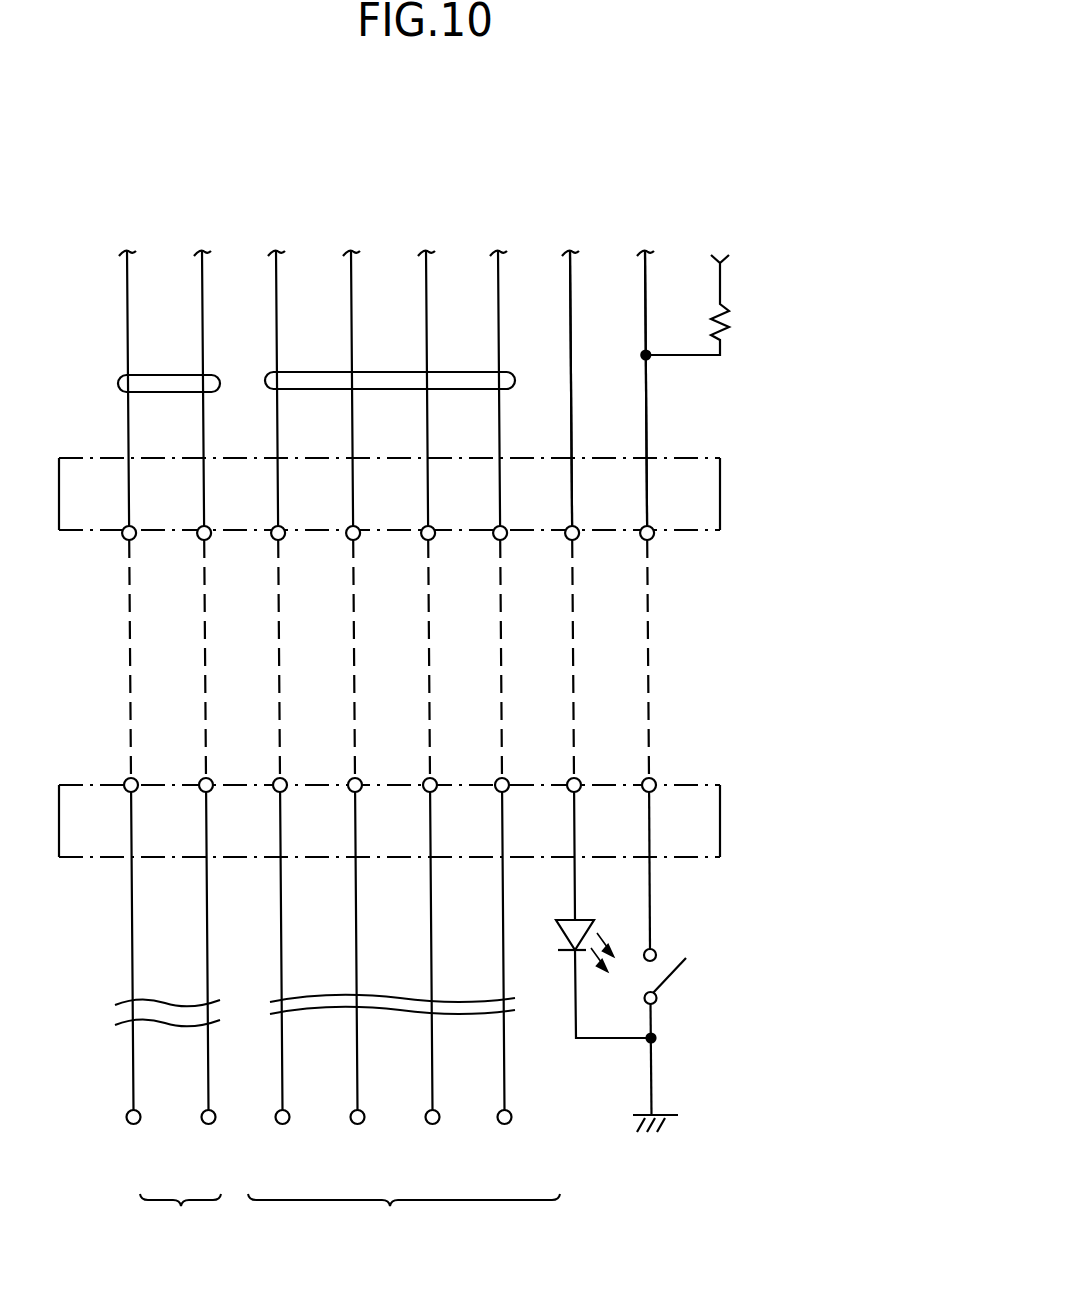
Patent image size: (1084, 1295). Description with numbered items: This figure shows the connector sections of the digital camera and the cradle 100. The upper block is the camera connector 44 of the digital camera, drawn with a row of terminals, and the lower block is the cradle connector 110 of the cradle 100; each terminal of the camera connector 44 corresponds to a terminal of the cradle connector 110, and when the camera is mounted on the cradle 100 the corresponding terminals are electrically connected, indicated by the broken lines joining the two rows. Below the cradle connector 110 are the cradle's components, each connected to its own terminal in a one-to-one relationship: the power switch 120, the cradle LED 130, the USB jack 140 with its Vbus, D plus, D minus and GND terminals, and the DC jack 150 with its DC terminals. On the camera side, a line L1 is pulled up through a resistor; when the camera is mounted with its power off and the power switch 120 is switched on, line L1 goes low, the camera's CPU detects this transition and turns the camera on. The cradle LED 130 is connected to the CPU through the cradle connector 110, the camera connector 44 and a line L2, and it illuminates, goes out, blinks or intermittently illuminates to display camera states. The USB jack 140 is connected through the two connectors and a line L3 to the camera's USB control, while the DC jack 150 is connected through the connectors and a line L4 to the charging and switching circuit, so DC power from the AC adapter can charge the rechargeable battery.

The cradle 100 is at (812, 977).
The camera connector 44 is at (720, 492).
The cradle connector 110 is at (720, 818).
The power switch 120 is at (670, 985).
The cradle LED 130 is at (558, 932).
The USB jack 140 is at (404, 1190).
The DC jack 150 is at (192, 1194).
The line L1 is at (648, 431).
The line L2 is at (571, 452).
The line L3 is at (402, 371).
The line L4 is at (156, 373).